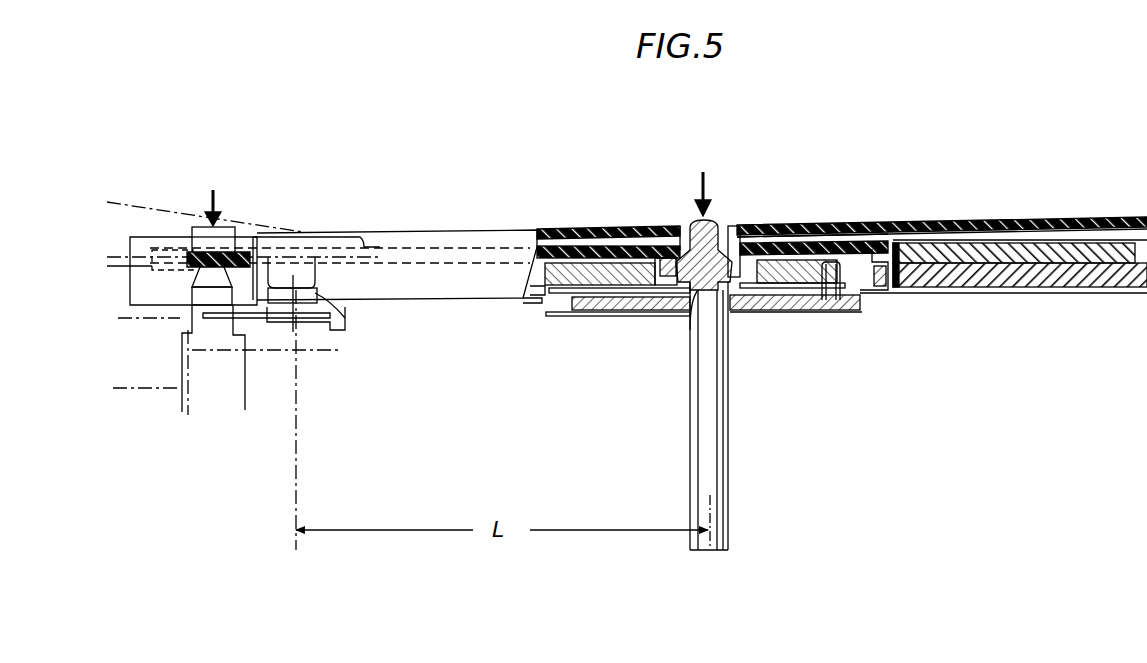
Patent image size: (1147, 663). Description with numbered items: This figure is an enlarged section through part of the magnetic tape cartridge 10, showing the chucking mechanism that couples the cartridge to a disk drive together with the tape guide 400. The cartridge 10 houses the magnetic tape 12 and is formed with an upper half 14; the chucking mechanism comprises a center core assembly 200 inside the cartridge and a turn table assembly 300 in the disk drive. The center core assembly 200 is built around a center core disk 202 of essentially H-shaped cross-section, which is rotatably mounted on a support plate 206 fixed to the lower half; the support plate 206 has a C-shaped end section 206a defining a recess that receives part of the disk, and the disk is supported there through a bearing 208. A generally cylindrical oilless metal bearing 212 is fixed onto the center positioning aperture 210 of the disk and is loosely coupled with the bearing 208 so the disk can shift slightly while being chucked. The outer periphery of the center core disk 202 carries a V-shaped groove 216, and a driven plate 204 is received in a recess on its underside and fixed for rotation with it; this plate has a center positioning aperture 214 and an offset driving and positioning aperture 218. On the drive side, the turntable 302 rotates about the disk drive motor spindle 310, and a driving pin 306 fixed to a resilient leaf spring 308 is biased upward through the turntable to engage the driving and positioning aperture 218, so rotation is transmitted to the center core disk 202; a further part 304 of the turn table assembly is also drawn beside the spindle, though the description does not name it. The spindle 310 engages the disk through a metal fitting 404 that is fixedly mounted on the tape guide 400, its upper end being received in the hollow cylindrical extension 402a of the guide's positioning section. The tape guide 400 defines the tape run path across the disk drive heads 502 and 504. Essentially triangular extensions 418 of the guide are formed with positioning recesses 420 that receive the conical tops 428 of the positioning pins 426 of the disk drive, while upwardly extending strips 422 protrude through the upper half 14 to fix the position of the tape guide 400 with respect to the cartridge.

The cartridge 10 is at (1018, 212).
The magnetic tape 12 is at (968, 227).
The upper half 14 is at (930, 290).
The center core assembly 200 is at (787, 260).
The center core disk 202 is at (596, 262).
The driven plate 204 is at (548, 300).
The support plate 206 is at (955, 250).
The C-shaped end section 206a is at (823, 243).
The bearing 208 is at (747, 255).
The center positioning aperture 210 is at (657, 262).
The oilless metal bearing 212 is at (672, 290).
The center positioning aperture 214 is at (744, 300).
The V-shaped groove 216 is at (882, 262).
The driving and positioning aperture 218 is at (873, 222).
The turn table assembly 300 is at (618, 316).
The turntable 302 is at (830, 312).
The support web 304 is at (690, 320).
The driving pin 306 is at (862, 300).
The resilient leaf spring 308 is at (836, 300).
The disk drive motor spindle 310 is at (713, 396).
The tape guide 400 is at (560, 240).
The hollow cylindrical extension 402a is at (682, 218).
The metal fitting 404 is at (720, 212).
The triangular extensions 418 is at (135, 268).
The positioning recesses 420 is at (142, 284).
The upwardly extending strips 422 is at (222, 228).
The positioning pins 426 is at (197, 393).
The conical tops 428 is at (192, 305).
The disk drive head 502 is at (313, 268).
The disk drive head 504 is at (330, 300).